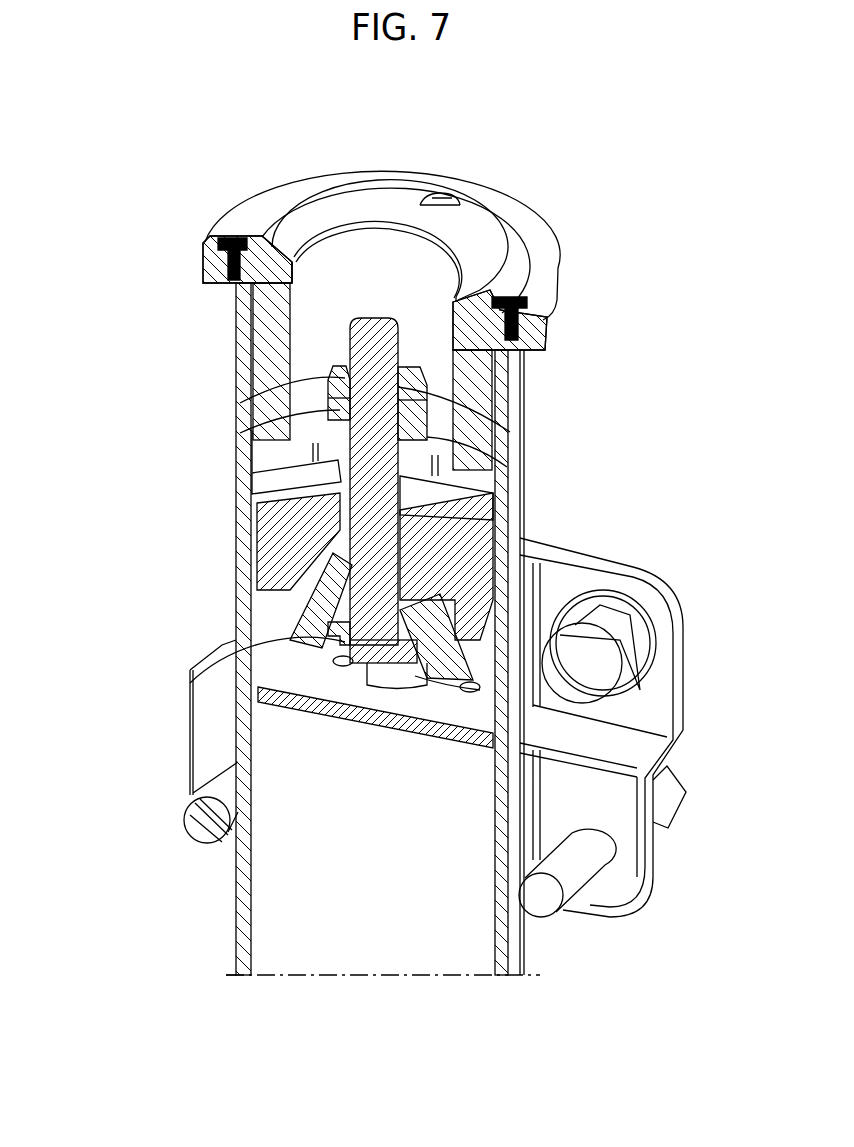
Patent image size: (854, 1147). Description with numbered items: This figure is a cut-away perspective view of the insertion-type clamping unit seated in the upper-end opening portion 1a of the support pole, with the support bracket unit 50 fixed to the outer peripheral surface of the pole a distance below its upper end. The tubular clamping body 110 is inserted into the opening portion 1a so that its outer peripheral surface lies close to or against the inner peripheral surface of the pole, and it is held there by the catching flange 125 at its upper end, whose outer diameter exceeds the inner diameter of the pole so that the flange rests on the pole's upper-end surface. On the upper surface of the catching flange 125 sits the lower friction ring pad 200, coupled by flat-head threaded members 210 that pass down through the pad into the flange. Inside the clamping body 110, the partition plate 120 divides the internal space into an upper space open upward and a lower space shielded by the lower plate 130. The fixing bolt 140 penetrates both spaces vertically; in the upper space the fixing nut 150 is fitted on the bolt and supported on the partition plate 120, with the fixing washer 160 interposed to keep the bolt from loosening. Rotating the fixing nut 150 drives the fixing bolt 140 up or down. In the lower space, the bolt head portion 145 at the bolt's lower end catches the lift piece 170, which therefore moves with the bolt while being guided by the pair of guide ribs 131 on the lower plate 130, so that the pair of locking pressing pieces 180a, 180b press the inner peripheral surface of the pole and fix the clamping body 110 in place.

The support bracket unit 50 is at (657, 582).
The clamping body 110 is at (262, 342).
The partition plate 120 is at (443, 420).
The catching flange 125 is at (217, 252).
The lower plate 130 is at (363, 722).
The guide ribs 131 is at (407, 678).
The fixing bolt 140 is at (390, 483).
The bolt head portion 145 is at (336, 640).
The fixing nut 150 is at (328, 387).
The fixing washer 160 is at (455, 442).
The lift piece 170 is at (290, 607).
The locking pressing piece 180a is at (295, 474).
The locking pressing piece 180b is at (486, 526).
The lower friction ring pad 200 is at (518, 233).
The flat-head threaded member 210 is at (443, 205).
The upper-end opening portion 1a is at (358, 885).